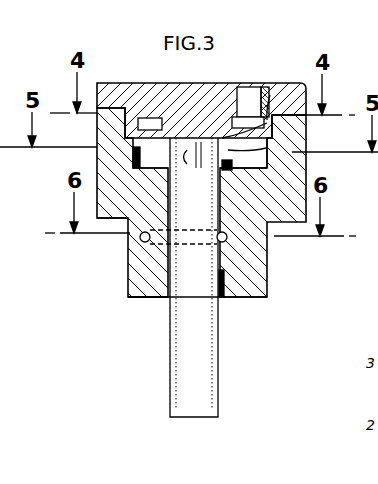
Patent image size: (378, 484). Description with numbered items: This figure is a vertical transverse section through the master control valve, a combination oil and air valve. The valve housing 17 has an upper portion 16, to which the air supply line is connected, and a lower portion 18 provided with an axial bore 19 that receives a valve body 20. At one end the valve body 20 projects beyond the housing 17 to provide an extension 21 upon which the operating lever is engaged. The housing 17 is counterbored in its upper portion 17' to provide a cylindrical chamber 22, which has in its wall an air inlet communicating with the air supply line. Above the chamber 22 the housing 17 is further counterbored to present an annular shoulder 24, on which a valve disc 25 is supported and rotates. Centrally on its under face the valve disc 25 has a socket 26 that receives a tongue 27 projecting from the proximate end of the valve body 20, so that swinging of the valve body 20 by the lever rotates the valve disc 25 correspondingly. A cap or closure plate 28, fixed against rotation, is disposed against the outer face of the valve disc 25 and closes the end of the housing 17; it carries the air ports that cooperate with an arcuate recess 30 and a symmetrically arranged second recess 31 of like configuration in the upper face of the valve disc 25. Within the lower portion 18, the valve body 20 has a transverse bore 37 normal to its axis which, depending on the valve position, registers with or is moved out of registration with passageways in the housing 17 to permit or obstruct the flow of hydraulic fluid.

The upper portion 16 is at (96, 162).
The valve housing 17 is at (98, 241).
The upper portion 17' is at (97, 143).
The lower portion 18 is at (128, 278).
The axial bore 19 is at (226, 298).
The valve body 20 is at (180, 283).
The extension 21 is at (186, 368).
The cylindrical chamber 22 is at (251, 160).
The annular shoulder 24 is at (283, 124).
The valve disc 25 is at (277, 102).
The socket 26 is at (237, 112).
The tongue 27 is at (275, 147).
The cap or closure plate 28 is at (167, 88).
The arcuate recess 30 is at (145, 122).
The second recess 31 is at (267, 118).
The transverse bore 37 is at (224, 240).